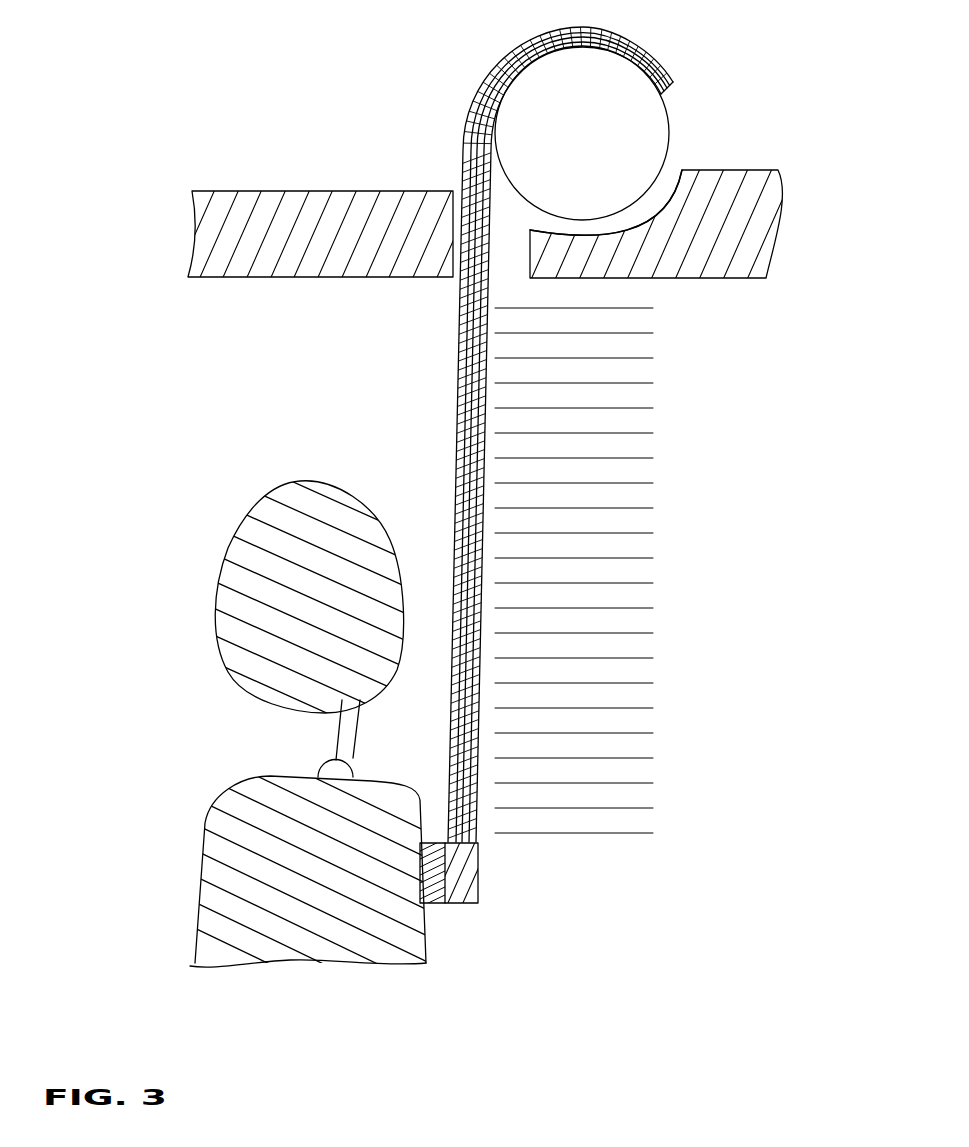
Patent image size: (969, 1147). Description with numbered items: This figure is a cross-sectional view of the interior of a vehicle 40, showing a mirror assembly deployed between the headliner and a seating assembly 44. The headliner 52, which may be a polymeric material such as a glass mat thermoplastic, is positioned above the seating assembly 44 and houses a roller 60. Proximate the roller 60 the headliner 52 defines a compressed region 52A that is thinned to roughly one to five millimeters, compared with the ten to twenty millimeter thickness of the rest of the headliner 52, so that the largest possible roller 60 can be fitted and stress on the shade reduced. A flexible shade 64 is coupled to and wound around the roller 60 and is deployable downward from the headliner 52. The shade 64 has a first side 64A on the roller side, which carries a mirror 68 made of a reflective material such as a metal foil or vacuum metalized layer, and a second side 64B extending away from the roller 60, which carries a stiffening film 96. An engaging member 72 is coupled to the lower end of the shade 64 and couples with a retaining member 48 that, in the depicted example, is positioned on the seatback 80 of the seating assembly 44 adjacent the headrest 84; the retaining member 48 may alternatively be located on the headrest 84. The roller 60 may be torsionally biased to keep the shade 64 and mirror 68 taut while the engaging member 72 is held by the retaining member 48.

The vehicle 40 is at (147, 115).
The seating assembly 44 is at (253, 473).
The retaining member 48 is at (433, 905).
The headliner 52 is at (335, 222).
The compressed region 52A is at (632, 229).
The roller 60 is at (622, 115).
The shade 64 is at (512, 430).
The first side 64A is at (470, 470).
The second side 64B is at (467, 333).
The mirror 68 is at (483, 467).
The engaging member 72 is at (478, 885).
The seatback 80 is at (243, 837).
The headrest 84 is at (272, 546).
The stiffening film 96 is at (462, 423).